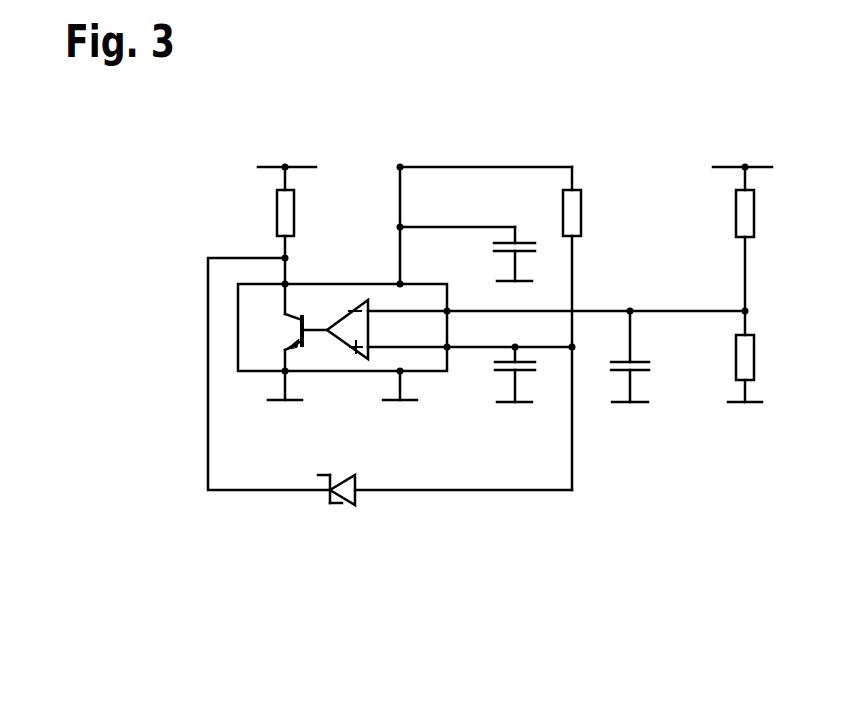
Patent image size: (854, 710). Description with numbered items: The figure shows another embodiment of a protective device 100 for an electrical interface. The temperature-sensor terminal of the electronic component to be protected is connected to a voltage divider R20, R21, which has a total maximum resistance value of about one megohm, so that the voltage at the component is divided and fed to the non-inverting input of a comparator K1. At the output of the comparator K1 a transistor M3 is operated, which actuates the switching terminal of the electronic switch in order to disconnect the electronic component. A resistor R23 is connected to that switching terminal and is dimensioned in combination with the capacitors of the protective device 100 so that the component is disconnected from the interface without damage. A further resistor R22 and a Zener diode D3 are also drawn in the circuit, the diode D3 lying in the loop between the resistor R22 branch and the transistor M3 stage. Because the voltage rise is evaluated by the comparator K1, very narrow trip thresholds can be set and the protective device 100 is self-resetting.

The protective device 100 is at (196, 542).
The resistor R23 is at (307, 213).
The resistor R22 is at (594, 213).
The voltage divider resistor R20 is at (722, 213).
The voltage divider resistor R21 is at (722, 357).
The transistor M3 is at (288, 327).
The comparator K1 is at (365, 329).
The Zener diode D3 is at (331, 504).